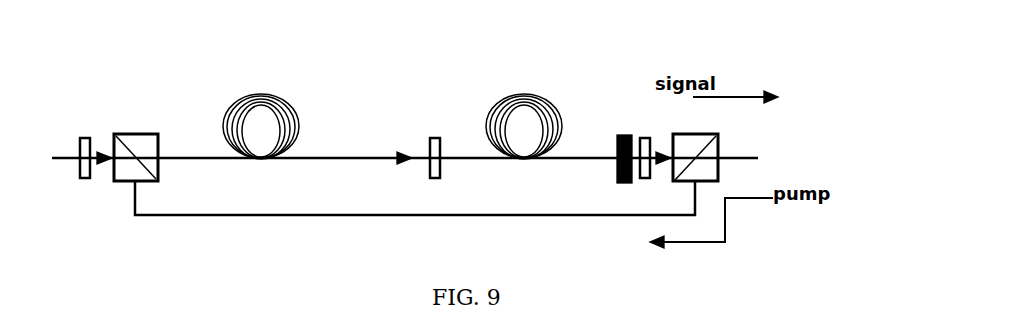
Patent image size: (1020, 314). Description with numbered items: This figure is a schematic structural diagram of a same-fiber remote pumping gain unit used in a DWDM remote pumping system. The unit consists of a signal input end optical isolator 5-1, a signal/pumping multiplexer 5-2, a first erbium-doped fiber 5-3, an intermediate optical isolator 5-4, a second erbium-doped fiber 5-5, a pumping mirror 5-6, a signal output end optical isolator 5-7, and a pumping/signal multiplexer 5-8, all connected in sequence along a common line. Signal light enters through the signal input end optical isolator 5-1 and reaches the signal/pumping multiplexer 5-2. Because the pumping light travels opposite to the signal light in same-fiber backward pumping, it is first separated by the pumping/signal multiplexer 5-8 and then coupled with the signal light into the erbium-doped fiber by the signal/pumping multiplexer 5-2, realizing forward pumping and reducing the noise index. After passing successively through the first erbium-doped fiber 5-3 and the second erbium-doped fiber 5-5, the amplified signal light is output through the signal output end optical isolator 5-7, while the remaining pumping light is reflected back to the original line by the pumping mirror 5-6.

The signal input end optical isolator 5-1 is at (80, 173).
The signal/pumping multiplexer 5-2 is at (120, 135).
The first erbium-doped fiber 5-3 is at (260, 116).
The intermediate optical isolator 5-4 is at (430, 140).
The second erbium-doped fiber 5-5 is at (522, 116).
The pumping mirror 5-6 is at (617, 145).
The signal output end optical isolator 5-7 is at (640, 140).
The pumping/signal multiplexer 5-8 is at (690, 124).